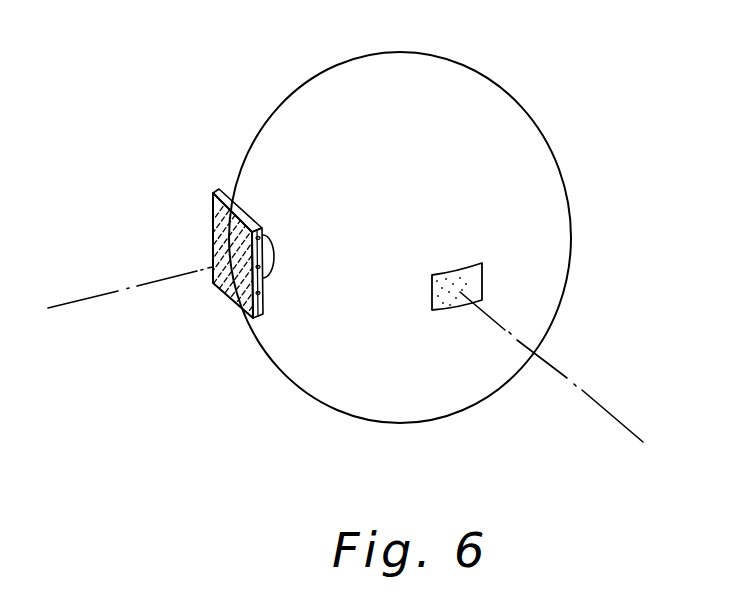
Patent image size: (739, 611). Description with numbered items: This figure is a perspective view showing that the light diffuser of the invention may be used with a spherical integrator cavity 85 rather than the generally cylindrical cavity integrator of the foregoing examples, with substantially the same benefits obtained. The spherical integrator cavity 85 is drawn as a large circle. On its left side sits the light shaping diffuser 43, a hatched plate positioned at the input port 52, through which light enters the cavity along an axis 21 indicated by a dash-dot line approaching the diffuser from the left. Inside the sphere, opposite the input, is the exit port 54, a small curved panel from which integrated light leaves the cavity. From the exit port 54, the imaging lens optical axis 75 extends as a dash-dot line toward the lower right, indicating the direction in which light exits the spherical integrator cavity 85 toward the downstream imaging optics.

The optical axis 21 is at (92, 297).
The light shaping diffuser 43 is at (213, 232).
The input port 52 is at (273, 247).
The exit port 54 is at (468, 273).
The imaging lens optical axis 75 is at (617, 418).
The spherical integrator cavity 85 is at (500, 90).